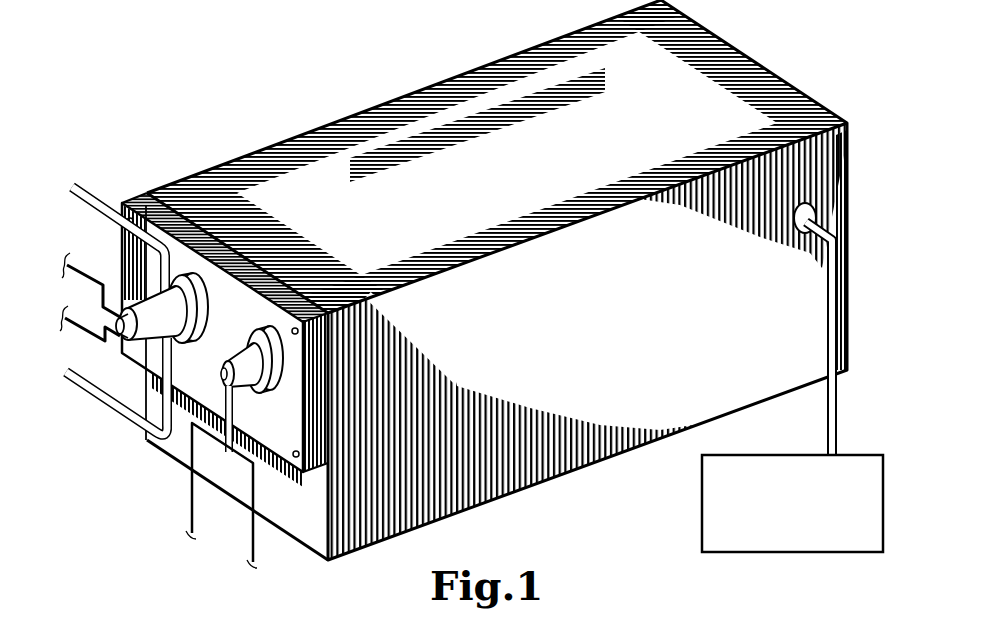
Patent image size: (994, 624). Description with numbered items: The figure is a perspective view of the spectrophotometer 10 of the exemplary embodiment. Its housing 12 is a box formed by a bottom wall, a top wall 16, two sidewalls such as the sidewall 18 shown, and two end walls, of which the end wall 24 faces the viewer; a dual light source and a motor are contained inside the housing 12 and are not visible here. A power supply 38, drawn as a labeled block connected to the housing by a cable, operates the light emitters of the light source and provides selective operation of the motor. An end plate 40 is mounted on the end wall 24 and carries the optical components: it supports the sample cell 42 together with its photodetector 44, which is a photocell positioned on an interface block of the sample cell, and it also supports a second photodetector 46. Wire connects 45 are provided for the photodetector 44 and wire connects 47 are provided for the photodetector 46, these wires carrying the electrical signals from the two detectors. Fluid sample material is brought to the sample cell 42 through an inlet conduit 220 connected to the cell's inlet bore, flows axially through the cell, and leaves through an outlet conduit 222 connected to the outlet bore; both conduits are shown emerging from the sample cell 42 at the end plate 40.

The spectrophotometer 10 is at (338, 74).
The housing 12 is at (298, 134).
The top wall 16 is at (534, 85).
The sidewall 18 is at (526, 455).
The end wall 24 is at (313, 532).
The power supply 38 is at (704, 541).
The end plate 40 is at (224, 302).
The sample cell 42 is at (152, 306).
The photodetector 44 is at (118, 338).
The wire connects 45 is at (88, 290).
The photodetector 46 is at (224, 379).
The wire connects 47 is at (212, 520).
The inlet conduit 220 is at (107, 210).
The outlet conduit 222 is at (120, 412).